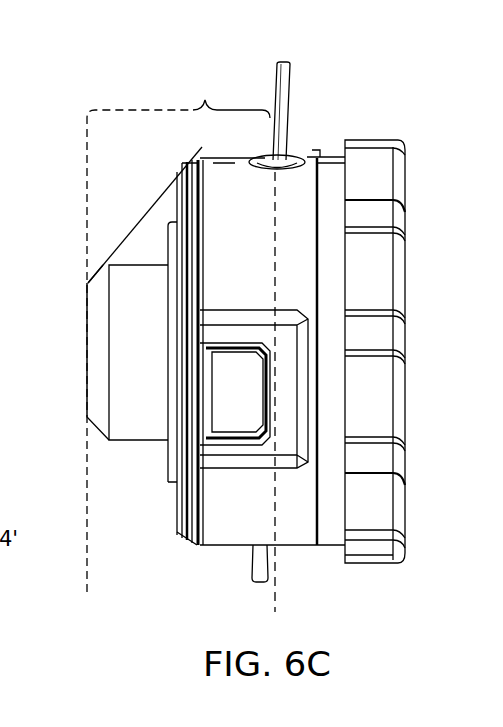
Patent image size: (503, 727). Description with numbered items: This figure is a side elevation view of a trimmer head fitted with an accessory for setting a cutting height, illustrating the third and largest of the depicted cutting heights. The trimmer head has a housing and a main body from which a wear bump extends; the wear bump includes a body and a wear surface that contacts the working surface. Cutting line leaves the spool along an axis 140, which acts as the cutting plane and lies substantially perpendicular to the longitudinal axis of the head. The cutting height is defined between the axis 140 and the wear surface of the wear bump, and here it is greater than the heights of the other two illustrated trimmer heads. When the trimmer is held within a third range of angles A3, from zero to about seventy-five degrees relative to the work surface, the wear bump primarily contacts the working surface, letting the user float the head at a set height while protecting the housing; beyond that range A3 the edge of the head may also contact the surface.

The axis 140 is at (253, 565).
The third range of angles A3 is at (130, 224).